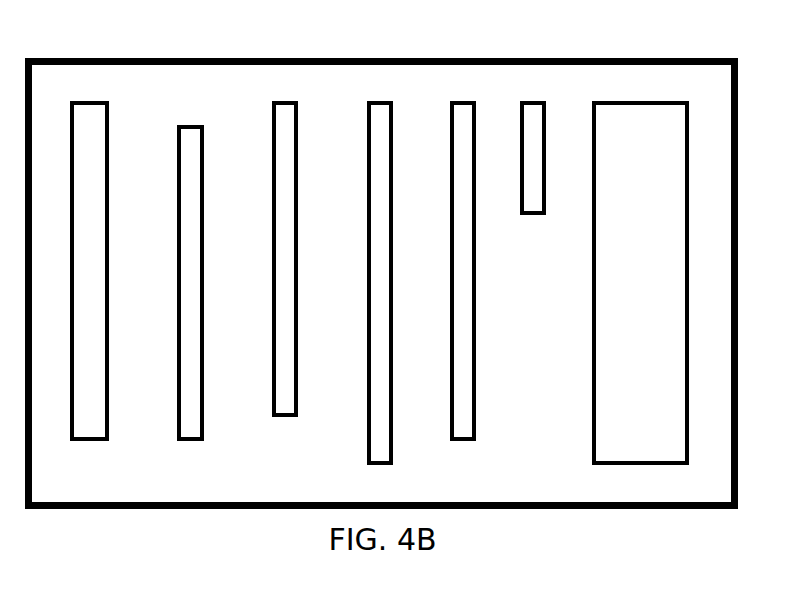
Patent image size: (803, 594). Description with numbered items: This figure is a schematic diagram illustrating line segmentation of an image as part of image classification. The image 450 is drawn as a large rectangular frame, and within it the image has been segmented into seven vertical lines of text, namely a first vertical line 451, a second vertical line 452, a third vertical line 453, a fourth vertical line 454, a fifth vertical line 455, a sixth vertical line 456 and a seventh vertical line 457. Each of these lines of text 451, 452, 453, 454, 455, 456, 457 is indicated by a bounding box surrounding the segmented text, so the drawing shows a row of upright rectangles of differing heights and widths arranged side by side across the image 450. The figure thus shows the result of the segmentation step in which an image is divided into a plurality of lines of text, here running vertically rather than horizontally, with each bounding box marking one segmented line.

The image 450 is at (598, 487).
The vertical line 451 is at (98, 148).
The vertical line 452 is at (194, 148).
The vertical line 453 is at (289, 148).
The vertical line 454 is at (387, 148).
The vertical line 455 is at (469, 148).
The vertical line 456 is at (540, 148).
The vertical line 457 is at (655, 148).